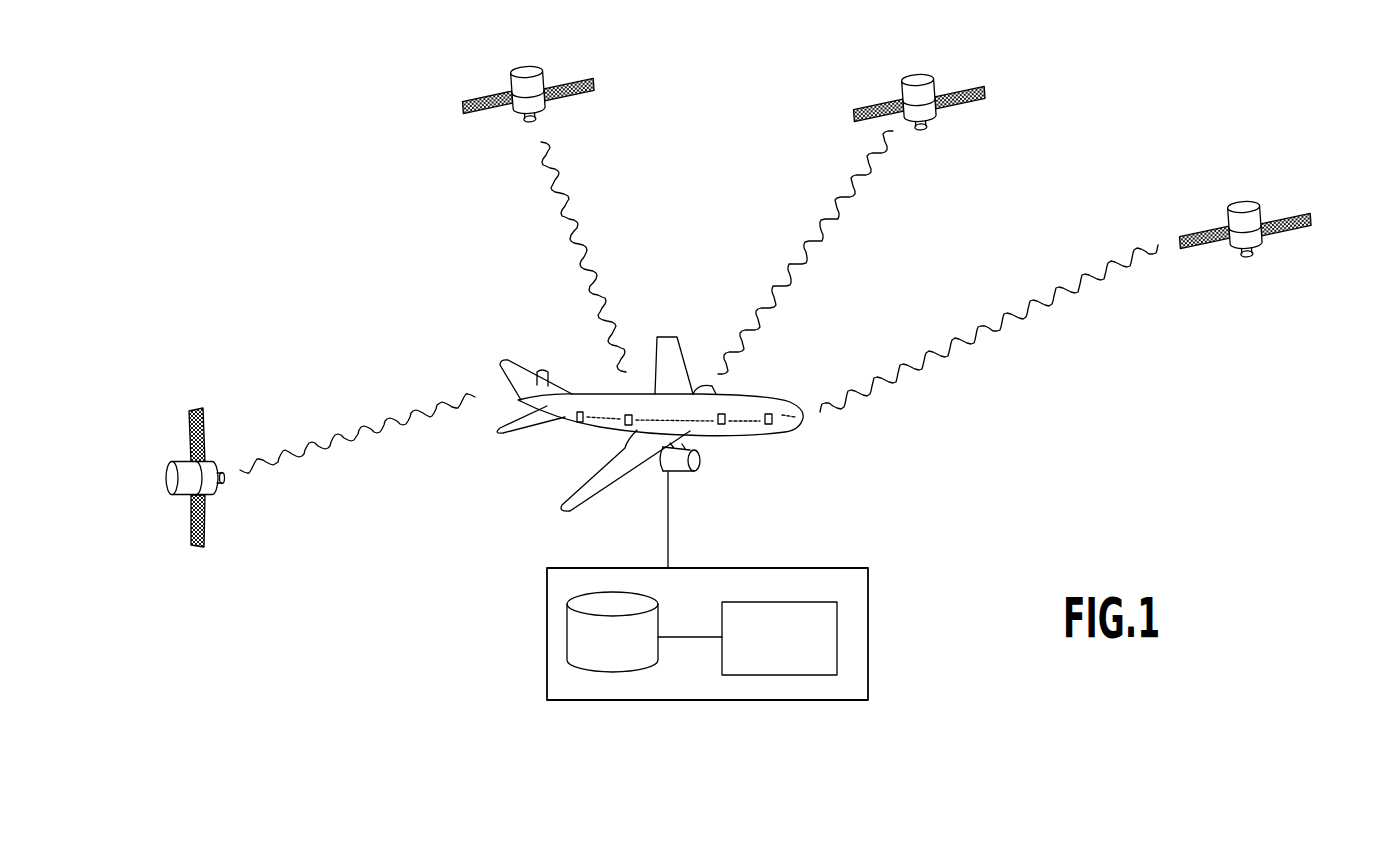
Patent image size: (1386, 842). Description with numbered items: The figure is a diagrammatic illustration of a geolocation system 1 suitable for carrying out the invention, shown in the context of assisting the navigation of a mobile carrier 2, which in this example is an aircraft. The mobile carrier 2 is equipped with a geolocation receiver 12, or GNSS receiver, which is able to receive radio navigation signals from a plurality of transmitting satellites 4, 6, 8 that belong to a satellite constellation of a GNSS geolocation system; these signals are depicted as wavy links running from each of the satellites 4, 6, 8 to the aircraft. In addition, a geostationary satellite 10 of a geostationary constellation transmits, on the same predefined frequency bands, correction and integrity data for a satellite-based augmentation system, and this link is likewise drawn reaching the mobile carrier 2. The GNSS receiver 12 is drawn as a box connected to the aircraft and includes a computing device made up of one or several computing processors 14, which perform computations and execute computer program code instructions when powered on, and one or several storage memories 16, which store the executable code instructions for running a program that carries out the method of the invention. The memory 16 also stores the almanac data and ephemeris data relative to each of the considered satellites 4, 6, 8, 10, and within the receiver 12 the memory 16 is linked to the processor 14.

The navigation system 1 is at (1083, 441).
The mobile carrier 2 is at (777, 433).
The transmitting satellite 4 is at (1302, 247).
The transmitting satellite 6 is at (487, 121).
The transmitting satellite 8 is at (969, 116).
The geostationary satellite 10 is at (172, 433).
The geolocation receiver 12 is at (744, 667).
The computing processor 14 is at (790, 677).
The storage memory 16 is at (618, 673).